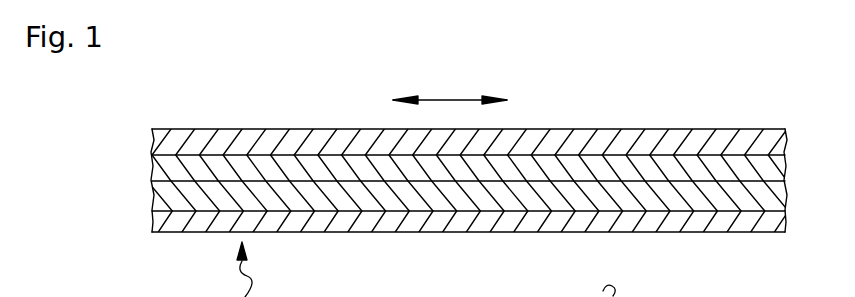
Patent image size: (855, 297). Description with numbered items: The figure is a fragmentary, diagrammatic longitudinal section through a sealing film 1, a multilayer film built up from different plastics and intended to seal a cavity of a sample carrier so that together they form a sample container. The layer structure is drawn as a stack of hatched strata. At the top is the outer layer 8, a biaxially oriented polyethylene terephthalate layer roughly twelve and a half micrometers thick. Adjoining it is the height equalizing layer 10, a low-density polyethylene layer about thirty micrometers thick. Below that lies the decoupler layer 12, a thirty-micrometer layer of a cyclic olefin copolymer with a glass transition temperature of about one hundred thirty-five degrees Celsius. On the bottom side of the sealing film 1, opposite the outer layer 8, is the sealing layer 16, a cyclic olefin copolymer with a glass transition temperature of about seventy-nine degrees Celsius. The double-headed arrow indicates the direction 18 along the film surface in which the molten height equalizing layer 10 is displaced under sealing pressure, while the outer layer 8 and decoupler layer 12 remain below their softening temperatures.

The sealing film 1 is at (649, 77).
The outer layer 8 is at (208, 128).
The height equalizing layer 10 is at (161, 167).
The decoupler layer 12 is at (152, 190).
The sealing layer 16 is at (152, 233).
The direction of the surface 18 is at (452, 98).